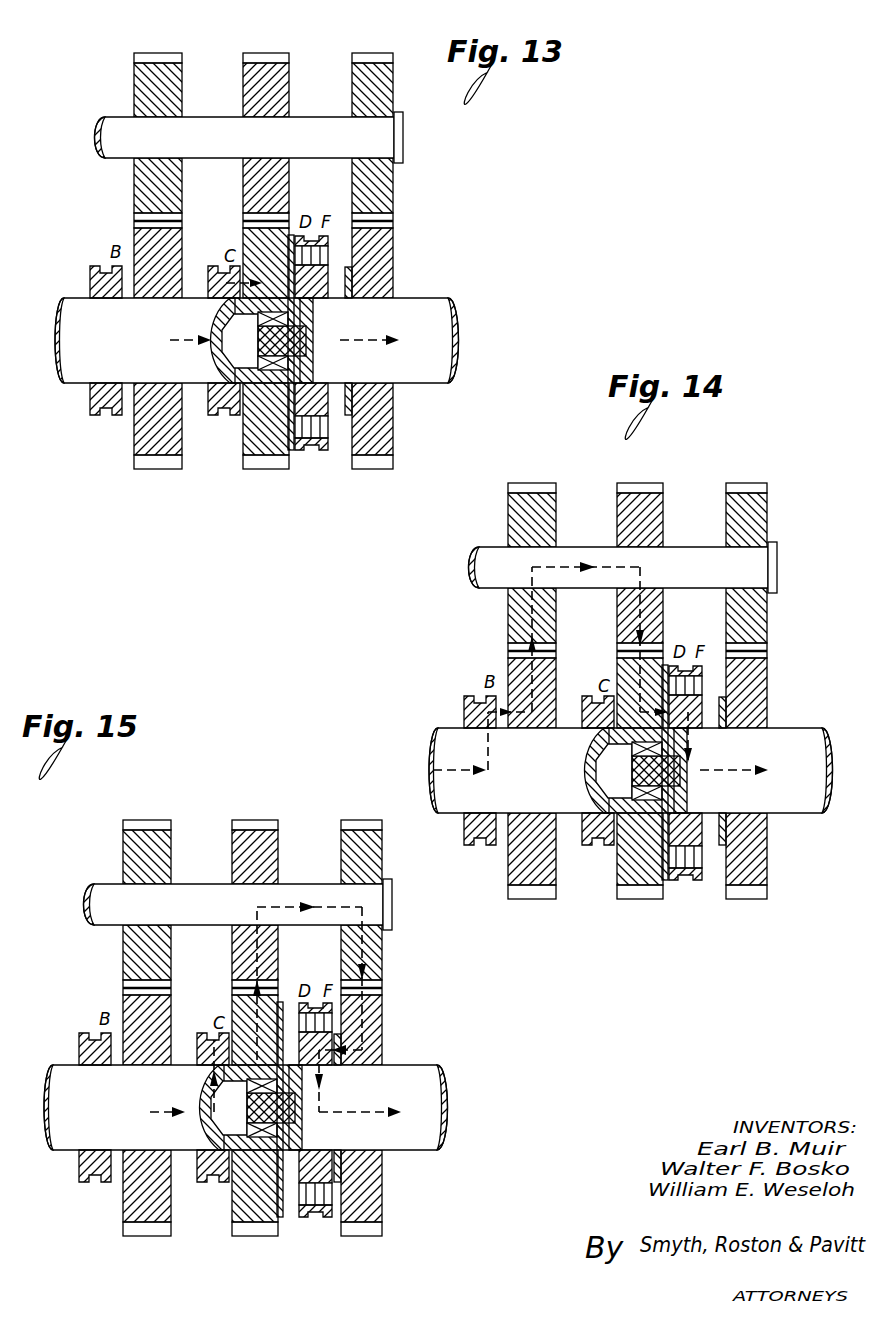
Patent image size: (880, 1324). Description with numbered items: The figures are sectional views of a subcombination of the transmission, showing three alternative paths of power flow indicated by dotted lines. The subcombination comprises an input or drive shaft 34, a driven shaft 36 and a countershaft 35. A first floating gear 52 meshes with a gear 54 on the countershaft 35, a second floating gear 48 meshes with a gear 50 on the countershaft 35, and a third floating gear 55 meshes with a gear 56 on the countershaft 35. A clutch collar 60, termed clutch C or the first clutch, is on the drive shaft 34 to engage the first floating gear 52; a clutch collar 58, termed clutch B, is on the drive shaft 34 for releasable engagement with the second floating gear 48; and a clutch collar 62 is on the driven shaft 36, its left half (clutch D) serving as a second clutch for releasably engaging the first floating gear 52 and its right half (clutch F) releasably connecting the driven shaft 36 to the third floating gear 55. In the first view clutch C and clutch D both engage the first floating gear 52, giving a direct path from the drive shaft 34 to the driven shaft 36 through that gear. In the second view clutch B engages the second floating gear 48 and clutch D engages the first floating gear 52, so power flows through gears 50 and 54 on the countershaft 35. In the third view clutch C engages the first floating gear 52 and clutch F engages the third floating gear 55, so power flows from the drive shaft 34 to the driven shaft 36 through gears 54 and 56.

In FIG. 13, the input shaft 34 is at (145, 340).
In FIG. 14, the input shaft 34 is at (519, 770).
In FIG. 15, the input shaft 34 is at (134, 1107).
In FIG. 13, the countershaft 35 is at (249, 137).
In FIG. 14, the countershaft 35 is at (623, 567).
In FIG. 15, the countershaft 35 is at (238, 904).
In FIG. 13, the driven shaft 36 is at (379, 340).
In FIG. 14, the driven shaft 36 is at (753, 770).
In FIG. 15, the driven shaft 36 is at (368, 1107).
In FIG. 13, the second floating gear 48 is at (147, 437).
In FIG. 14, the second floating gear 48 is at (505, 860).
In FIG. 15, the second floating gear 48 is at (122, 1200).
In FIG. 13, the gear 50 is at (148, 80).
In FIG. 14, the gear 50 is at (505, 605).
In FIG. 15, the gear 50 is at (123, 942).
In FIG. 13, the first floating gear 52 is at (243, 445).
In FIG. 14, the first floating gear 52 is at (631, 874).
In FIG. 15, the first floating gear 52 is at (255, 1214).
In FIG. 13, the gear 54 is at (255, 88).
In FIG. 14, the gear 54 is at (617, 605).
In FIG. 15, the gear 54 is at (232, 942).
In FIG. 13, the third floating gear 55 is at (378, 438).
In FIG. 14, the third floating gear 55 is at (769, 856).
In FIG. 15, the third floating gear 55 is at (382, 1193).
In FIG. 13, the gear 56 is at (365, 90).
In FIG. 14, the gear 56 is at (723, 605).
In FIG. 15, the gear 56 is at (339, 942).
In FIG. 13, the clutch collar 58 is at (95, 390).
In FIG. 14, the clutch collar 58 is at (457, 780).
In FIG. 15, the clutch collar 58 is at (70, 1120).
In FIG. 13, the clutch collar 60 is at (213, 408).
In FIG. 14, the clutch collar 60 is at (629, 795).
In FIG. 15, the clutch collar 60 is at (246, 1127).
In FIG. 13, the clutch collar 62 is at (310, 452).
In FIG. 14, the clutch collar 62 is at (689, 803).
In FIG. 15, the clutch collar 62 is at (312, 1138).